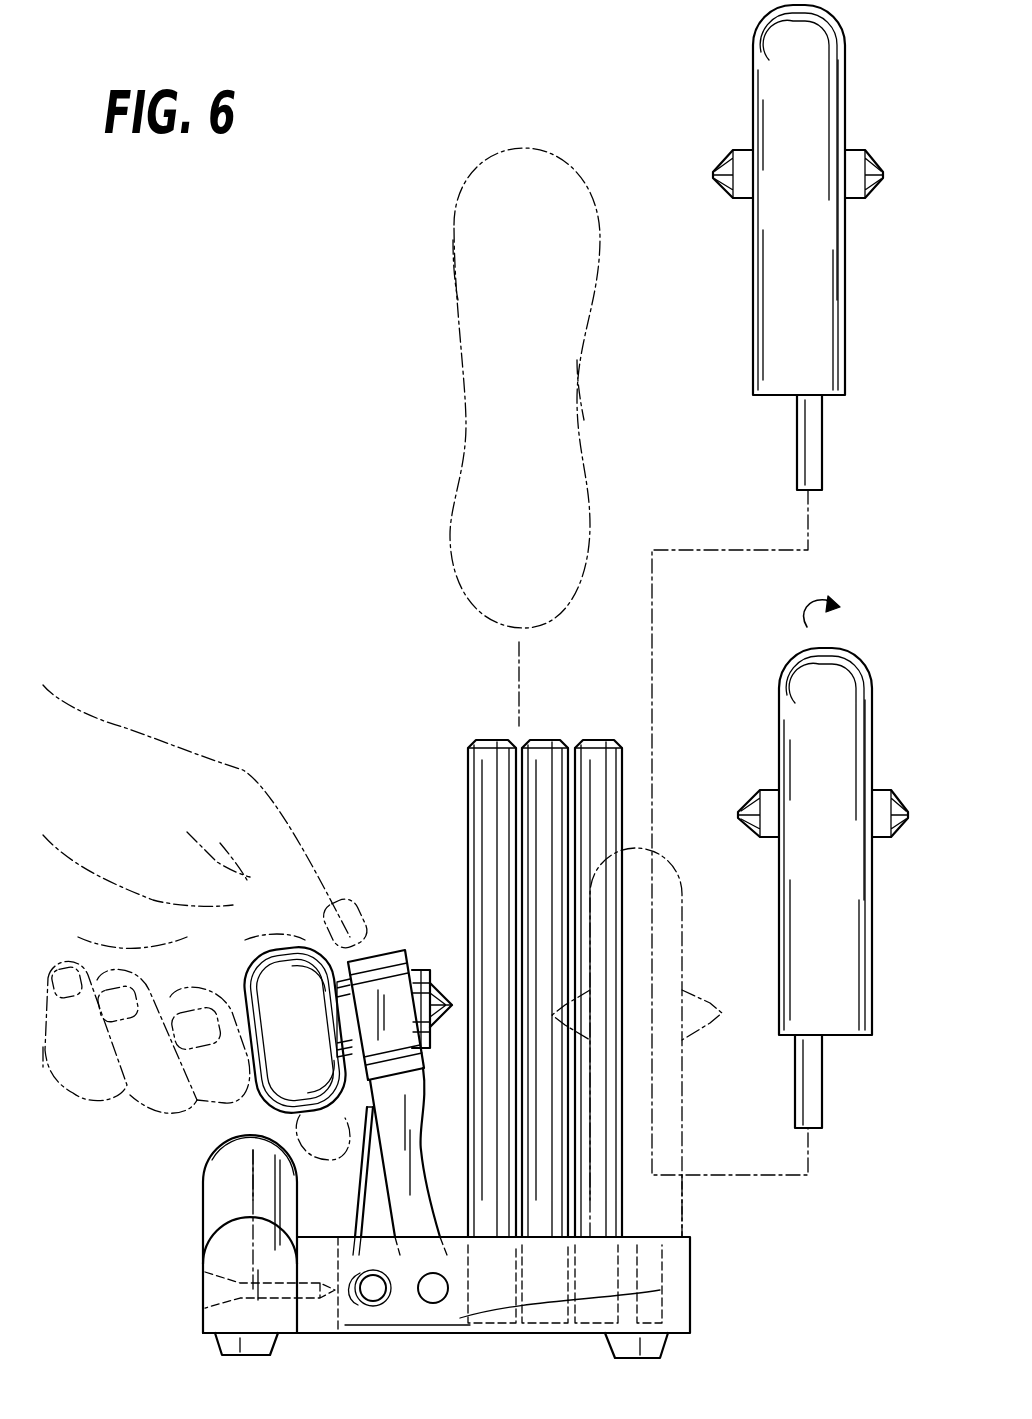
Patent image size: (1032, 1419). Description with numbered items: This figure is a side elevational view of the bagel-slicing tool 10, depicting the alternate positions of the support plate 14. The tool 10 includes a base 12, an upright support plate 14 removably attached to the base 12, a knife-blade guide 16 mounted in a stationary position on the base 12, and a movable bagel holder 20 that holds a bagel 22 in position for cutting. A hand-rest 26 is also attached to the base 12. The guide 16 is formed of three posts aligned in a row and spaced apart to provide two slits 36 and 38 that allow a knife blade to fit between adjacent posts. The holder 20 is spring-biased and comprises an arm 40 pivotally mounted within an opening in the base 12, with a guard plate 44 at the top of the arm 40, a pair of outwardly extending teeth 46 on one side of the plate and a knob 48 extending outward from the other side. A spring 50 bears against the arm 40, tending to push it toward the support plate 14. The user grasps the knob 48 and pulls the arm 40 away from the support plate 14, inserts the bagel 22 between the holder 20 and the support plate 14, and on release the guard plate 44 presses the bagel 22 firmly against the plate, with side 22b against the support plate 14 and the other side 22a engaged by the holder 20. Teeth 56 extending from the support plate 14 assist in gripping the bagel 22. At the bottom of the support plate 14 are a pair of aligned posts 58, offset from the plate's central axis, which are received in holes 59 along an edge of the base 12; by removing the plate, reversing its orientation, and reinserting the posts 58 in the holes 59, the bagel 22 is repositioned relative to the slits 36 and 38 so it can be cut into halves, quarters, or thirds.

The tool 10 is at (412, 743).
The base 12 is at (447, 1237).
The support plate 14 is at (763, 247).
The knife-blade guide 16 is at (470, 735).
The bagel holder 20 is at (258, 1108).
The bagel 22 is at (448, 188).
The other side of the bagel 22a is at (577, 388).
The side of the bagel 22b is at (448, 290).
The hand-rest 26 is at (222, 1203).
The slit 36 is at (570, 745).
The slit 38 is at (518, 743).
The arm 40 is at (412, 1113).
The guard plate 44 is at (385, 965).
The teeth 46 is at (432, 970).
The knob 48 is at (243, 968).
The spring 50 is at (373, 1292).
The teeth 56 is at (738, 182).
The posts 58 is at (825, 440).
The holes 59 is at (665, 1300).